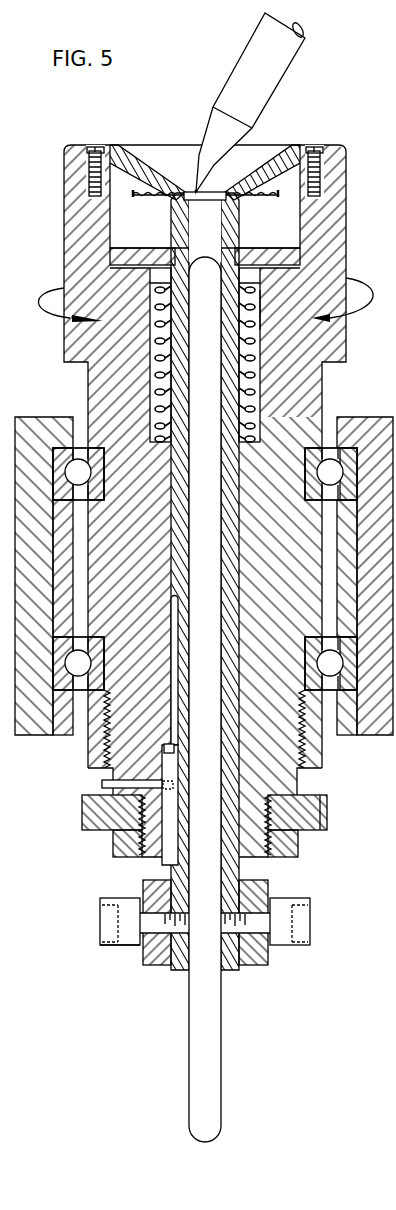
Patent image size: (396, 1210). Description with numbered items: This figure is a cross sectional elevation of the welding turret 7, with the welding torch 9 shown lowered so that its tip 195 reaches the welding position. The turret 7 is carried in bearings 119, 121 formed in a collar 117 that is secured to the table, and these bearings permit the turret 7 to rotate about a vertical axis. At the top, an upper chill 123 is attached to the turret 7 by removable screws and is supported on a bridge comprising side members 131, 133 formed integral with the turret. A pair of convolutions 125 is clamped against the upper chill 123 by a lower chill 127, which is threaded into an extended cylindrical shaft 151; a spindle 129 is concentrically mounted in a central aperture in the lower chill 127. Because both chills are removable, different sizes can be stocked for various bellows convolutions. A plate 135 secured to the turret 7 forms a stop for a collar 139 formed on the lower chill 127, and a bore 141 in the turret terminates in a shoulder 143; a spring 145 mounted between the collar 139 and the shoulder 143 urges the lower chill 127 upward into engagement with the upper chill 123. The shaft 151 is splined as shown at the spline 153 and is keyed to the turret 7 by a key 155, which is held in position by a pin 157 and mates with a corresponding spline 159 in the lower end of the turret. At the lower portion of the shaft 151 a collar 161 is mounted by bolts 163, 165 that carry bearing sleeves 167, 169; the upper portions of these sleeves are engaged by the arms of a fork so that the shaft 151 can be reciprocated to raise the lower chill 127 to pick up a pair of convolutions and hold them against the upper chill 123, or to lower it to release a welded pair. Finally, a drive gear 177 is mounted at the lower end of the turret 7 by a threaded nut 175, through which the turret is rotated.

The welding turret 7 is at (352, 155).
The welding torch 9 is at (243, 51).
The collar 117 is at (382, 418).
The bearing 119 is at (205, 474).
The bearing 121 is at (205, 663).
The upper chill 123 is at (178, 174).
The convolutions 125 is at (158, 205).
The lower chill 127 is at (236, 208).
The spindle 129 is at (217, 1051).
The side member 131 is at (64, 197).
The side member 133 is at (346, 186).
The plate 135 is at (250, 250).
The collar 139 is at (262, 272).
The bore 141 is at (268, 350).
The shoulder 143 is at (262, 426).
The spring 145 is at (262, 307).
The shaft 151 is at (230, 514).
The spline 153 is at (176, 648).
The key 155 is at (176, 769).
The pin 157 is at (102, 784).
The spline 159 is at (174, 746).
The collar 161 is at (268, 884).
The bolt 163 is at (100, 938).
The bolt 165 is at (310, 916).
The bearing sleeve 167 is at (122, 947).
The bearing sleeve 169 is at (308, 899).
The threaded nut 175 is at (299, 848).
The drive gear 177 is at (327, 804).
The tip 195 is at (193, 184).